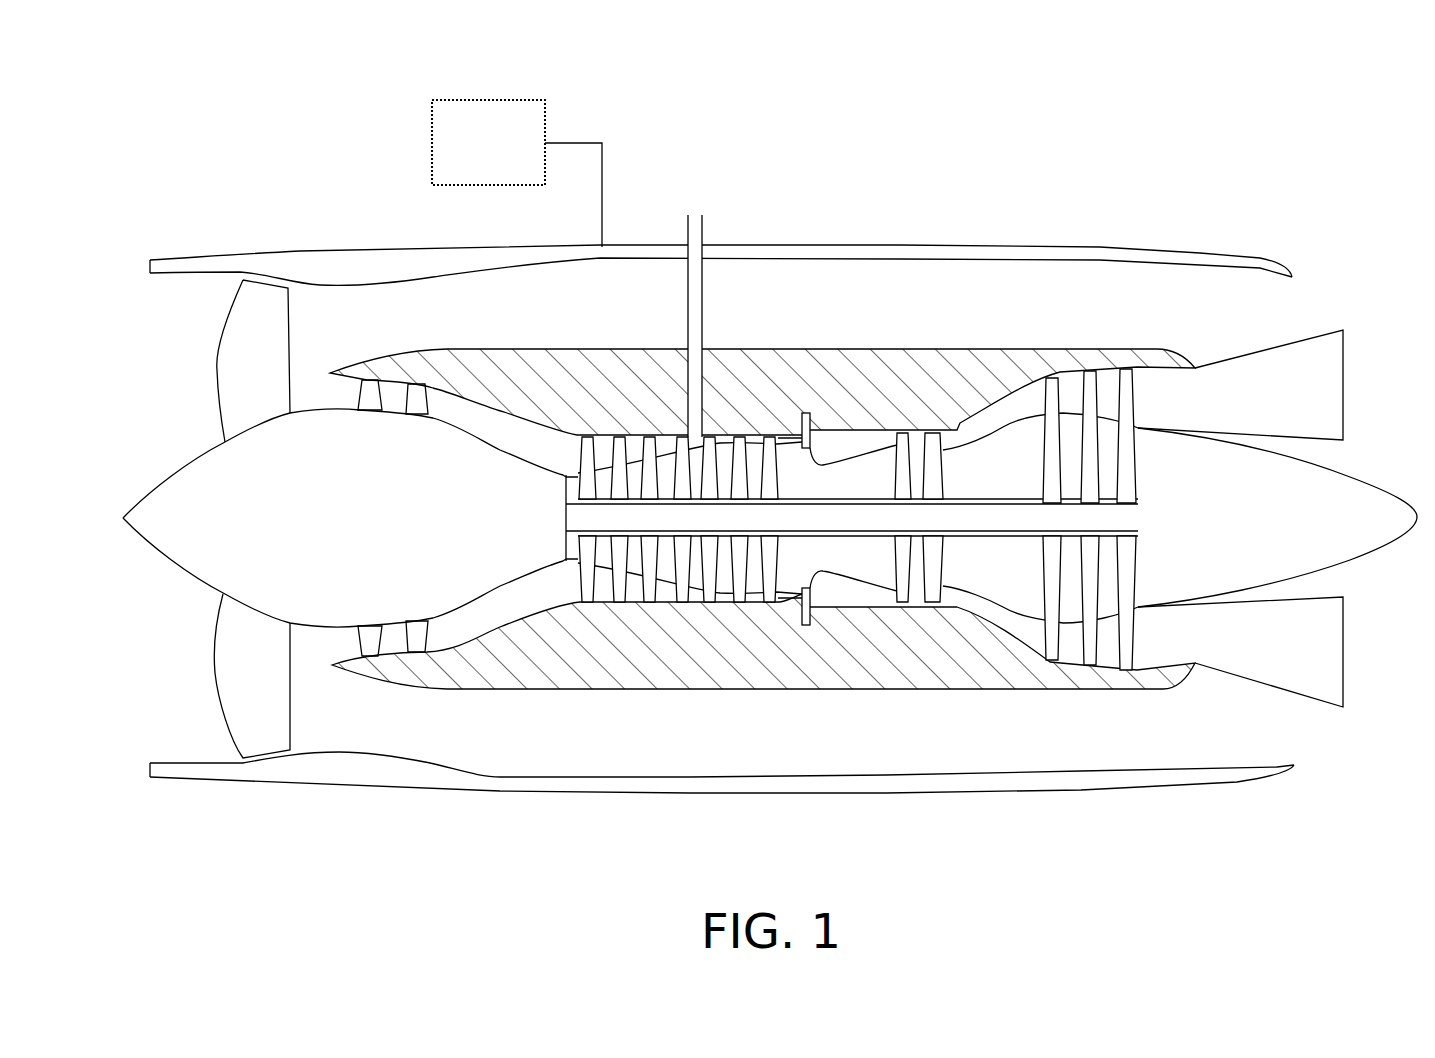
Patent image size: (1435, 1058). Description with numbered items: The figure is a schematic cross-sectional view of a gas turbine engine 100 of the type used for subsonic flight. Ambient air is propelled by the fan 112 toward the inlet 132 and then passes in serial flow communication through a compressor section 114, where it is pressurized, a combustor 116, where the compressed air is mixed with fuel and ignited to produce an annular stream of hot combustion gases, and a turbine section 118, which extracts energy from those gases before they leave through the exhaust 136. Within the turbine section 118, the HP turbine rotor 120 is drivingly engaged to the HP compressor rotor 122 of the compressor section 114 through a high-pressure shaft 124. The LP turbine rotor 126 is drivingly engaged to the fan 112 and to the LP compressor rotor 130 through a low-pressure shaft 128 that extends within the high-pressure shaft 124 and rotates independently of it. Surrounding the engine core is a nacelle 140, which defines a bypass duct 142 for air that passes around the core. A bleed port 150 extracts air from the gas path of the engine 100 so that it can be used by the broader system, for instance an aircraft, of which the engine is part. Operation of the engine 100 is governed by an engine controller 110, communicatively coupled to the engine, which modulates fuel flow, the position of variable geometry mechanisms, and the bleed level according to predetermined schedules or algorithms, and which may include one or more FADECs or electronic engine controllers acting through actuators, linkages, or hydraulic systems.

The gas turbine engine 100 is at (207, 126).
The engine controller 110 is at (462, 160).
The fan 112 is at (247, 697).
The compressor section 114 is at (347, 824).
The combustor 116 is at (825, 440).
The turbine section 118 is at (884, 824).
The HP turbine rotor 120 is at (960, 566).
The HP compressor rotor 122 is at (556, 589).
The high-pressure shaft 124 is at (800, 538).
The LP turbine rotor 126 is at (1162, 634).
The low-pressure shaft 128 is at (1006, 536).
The LP compressor rotor 130 is at (343, 645).
The inlet 132 is at (119, 351).
The exhaust 136 is at (1364, 449).
The nacelle 140 is at (250, 272).
The bypass duct 142 is at (1196, 297).
The bleed port 150 is at (703, 212).